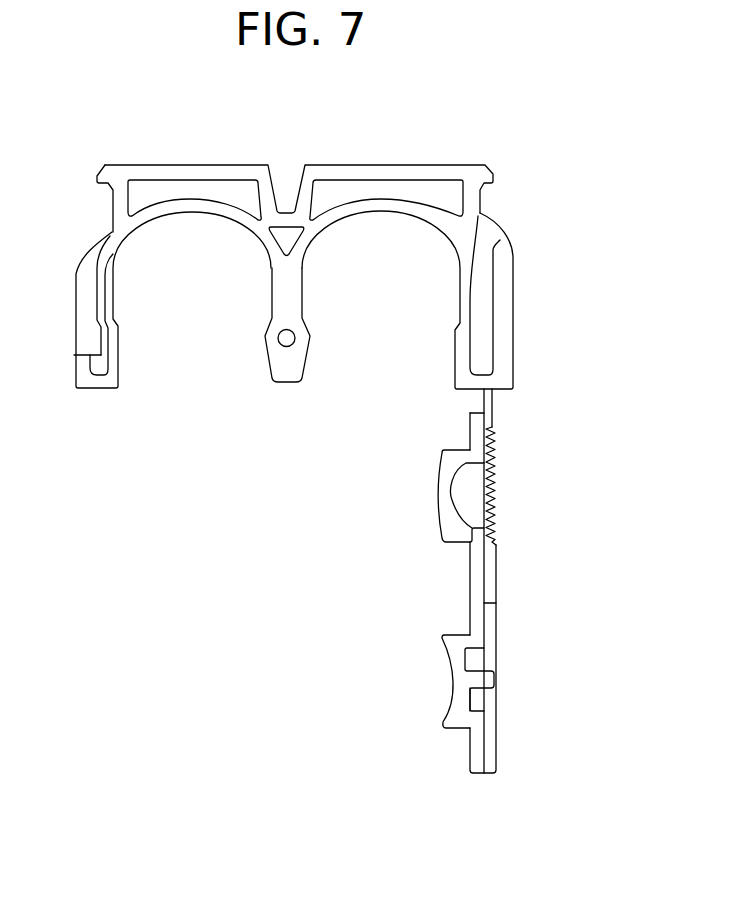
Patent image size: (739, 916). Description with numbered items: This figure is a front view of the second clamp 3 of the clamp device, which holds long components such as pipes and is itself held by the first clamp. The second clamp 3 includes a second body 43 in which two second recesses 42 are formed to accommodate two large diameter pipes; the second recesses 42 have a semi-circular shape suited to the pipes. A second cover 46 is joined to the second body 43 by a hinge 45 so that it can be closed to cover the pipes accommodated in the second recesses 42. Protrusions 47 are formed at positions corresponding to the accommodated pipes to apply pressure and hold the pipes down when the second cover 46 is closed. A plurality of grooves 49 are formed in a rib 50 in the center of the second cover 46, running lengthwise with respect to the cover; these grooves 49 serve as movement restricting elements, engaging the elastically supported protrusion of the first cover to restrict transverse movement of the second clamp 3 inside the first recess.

The second clamp 3 is at (517, 122).
The second recesses 42 is at (195, 330).
The second body 43 is at (157, 187).
The hinge 45 is at (490, 408).
The second cover 46 is at (477, 598).
The protrusions 47 is at (452, 495).
The grooves 49 is at (495, 492).
The rib 50 is at (482, 505).